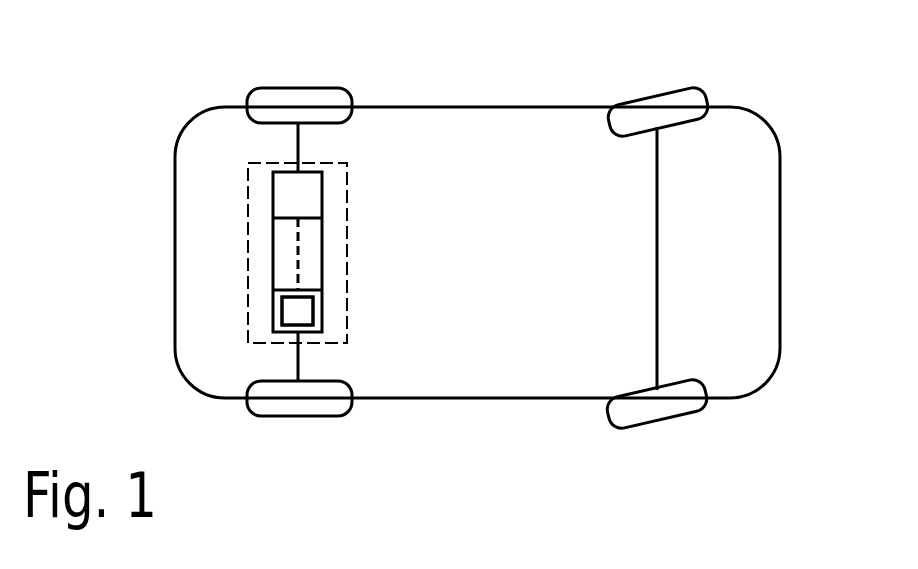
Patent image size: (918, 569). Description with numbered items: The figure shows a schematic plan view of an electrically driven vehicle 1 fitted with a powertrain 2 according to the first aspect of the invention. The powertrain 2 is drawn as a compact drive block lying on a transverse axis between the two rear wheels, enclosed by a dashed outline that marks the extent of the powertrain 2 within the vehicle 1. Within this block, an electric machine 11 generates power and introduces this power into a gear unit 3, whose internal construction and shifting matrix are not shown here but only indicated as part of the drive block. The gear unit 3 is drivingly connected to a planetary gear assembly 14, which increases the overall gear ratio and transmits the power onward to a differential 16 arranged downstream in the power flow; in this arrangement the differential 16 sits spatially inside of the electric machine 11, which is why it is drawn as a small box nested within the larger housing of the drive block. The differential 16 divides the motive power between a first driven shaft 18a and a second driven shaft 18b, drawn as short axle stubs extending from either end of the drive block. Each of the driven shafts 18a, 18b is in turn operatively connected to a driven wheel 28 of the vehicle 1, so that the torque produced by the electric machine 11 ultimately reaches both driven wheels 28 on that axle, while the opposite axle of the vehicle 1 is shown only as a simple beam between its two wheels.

The vehicle 1 is at (758, 82).
The powertrain 2 is at (248, 230).
The gear unit 3 is at (322, 257).
The electric machine 11 is at (323, 310).
The planetary gear assembly 14 is at (323, 198).
The differential 16 is at (282, 310).
The first driven shaft 18a is at (298, 364).
The second driven shaft 18b is at (297, 135).
The driven wheel 28 is at (322, 88).